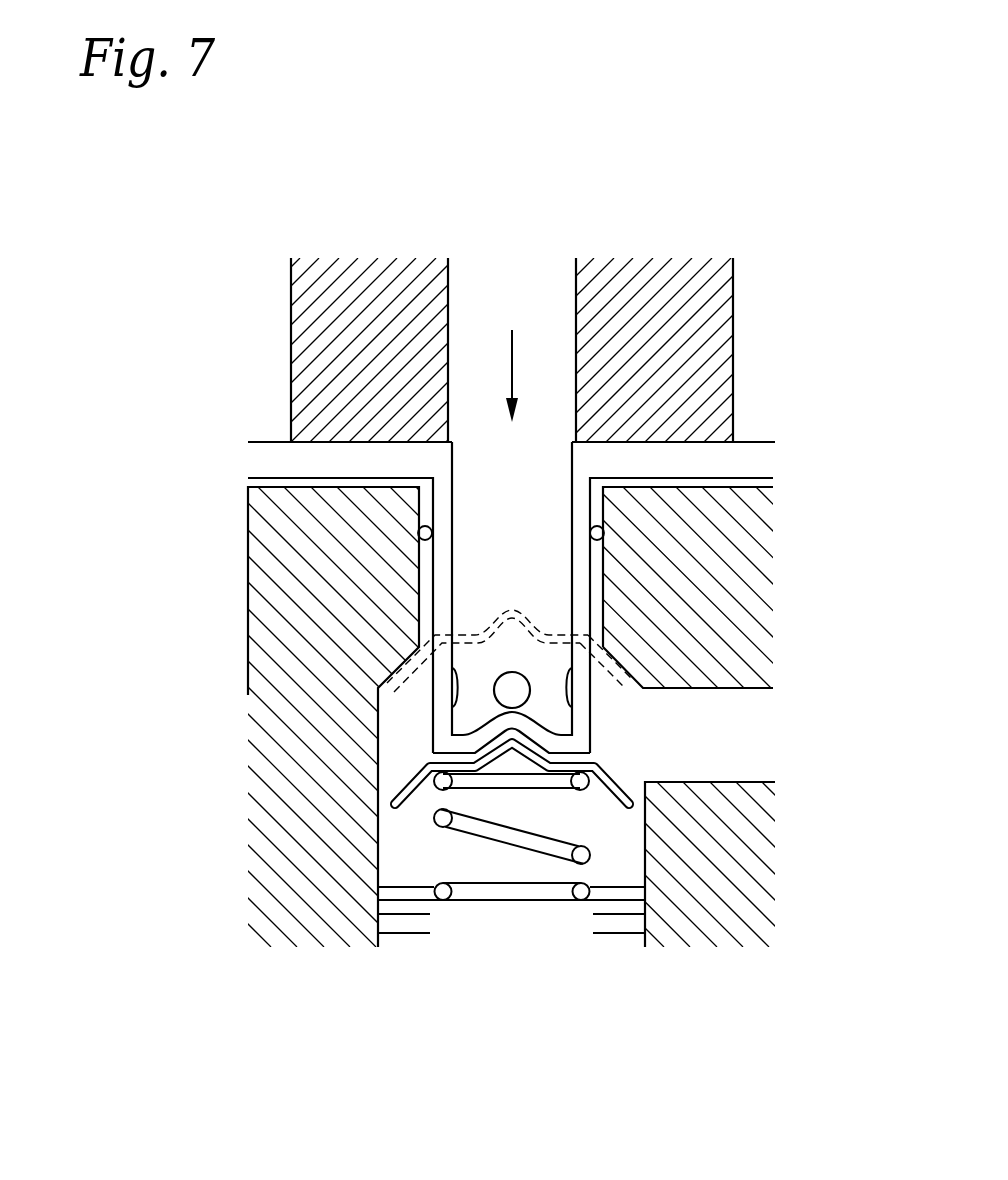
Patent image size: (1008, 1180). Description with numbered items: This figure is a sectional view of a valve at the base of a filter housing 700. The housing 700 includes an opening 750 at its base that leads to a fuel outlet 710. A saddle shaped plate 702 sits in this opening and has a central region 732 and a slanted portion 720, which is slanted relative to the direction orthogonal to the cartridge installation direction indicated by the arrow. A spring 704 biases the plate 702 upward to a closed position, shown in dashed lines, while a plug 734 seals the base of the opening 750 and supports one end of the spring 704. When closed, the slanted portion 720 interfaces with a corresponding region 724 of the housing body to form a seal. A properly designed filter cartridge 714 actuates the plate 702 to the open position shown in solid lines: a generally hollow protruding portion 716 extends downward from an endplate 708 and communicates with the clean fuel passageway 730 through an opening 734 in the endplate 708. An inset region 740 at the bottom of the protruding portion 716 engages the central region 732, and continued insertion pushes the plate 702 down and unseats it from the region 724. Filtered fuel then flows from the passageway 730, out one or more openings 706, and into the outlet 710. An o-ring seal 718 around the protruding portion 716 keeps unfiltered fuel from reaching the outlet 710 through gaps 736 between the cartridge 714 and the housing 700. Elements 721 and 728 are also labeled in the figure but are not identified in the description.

The filter housing 700 is at (215, 865).
The saddle shaped plate 702 is at (625, 795).
The spring 704 is at (478, 892).
The openings 706 is at (515, 684).
The endplate 708 is at (758, 464).
The fuel outlet 710 is at (760, 718).
The filter cartridge 714 is at (262, 322).
The protruding portion 716 is at (395, 696).
The o-ring seal 718 is at (605, 526).
The slanted portion 720 is at (600, 783).
The ball 721 is at (537, 742).
The corresponding region 724 is at (610, 678).
The formed sheet 728 is at (454, 712).
The clean fuel passageway 730 is at (555, 276).
The central region 732 is at (470, 634).
The plug 734 is at (533, 468).
The gaps 736 is at (770, 485).
The inset region 740 is at (490, 714).
The opening 750 is at (256, 484).